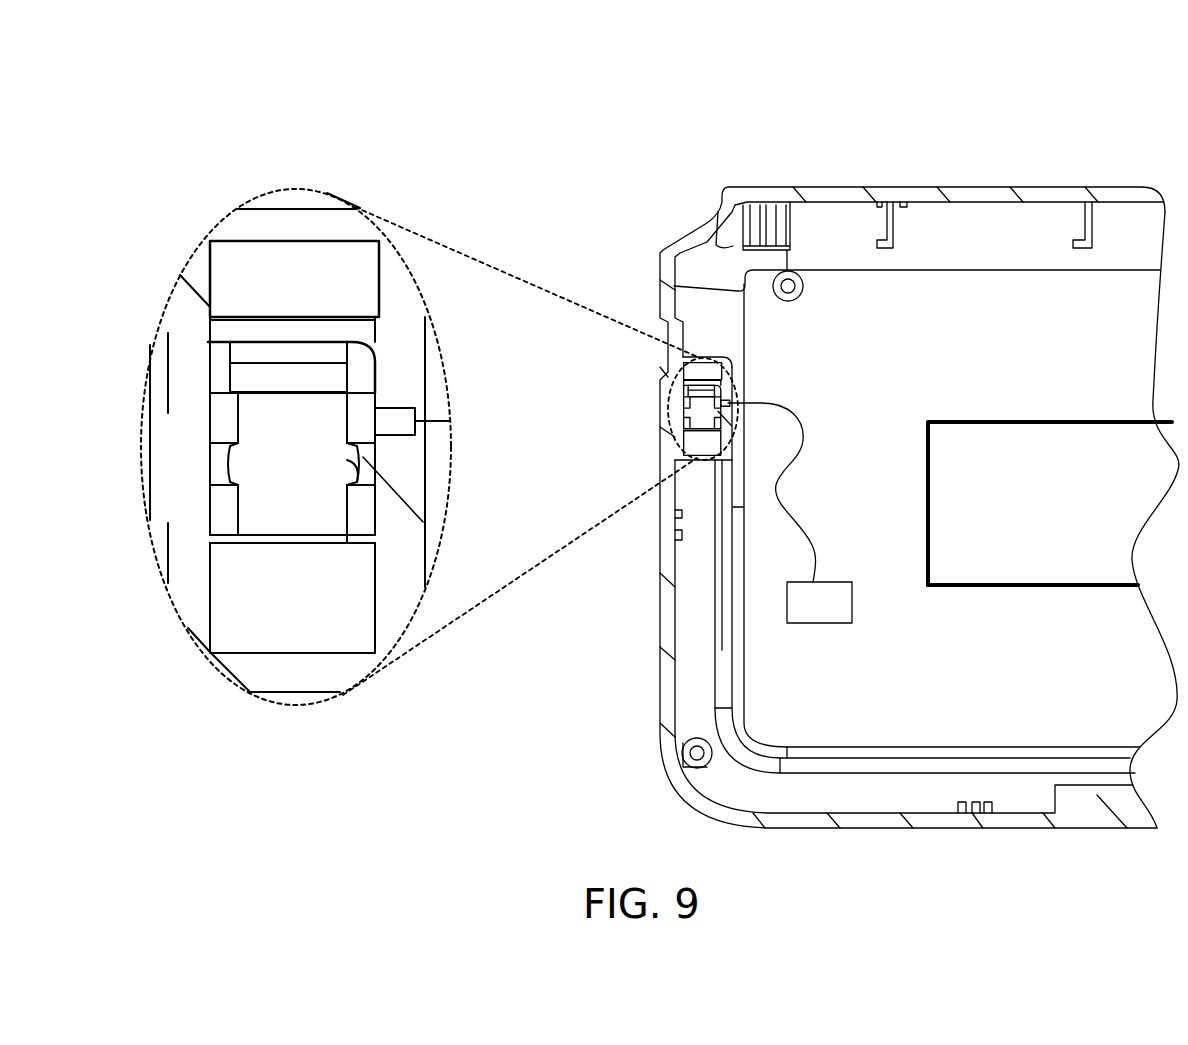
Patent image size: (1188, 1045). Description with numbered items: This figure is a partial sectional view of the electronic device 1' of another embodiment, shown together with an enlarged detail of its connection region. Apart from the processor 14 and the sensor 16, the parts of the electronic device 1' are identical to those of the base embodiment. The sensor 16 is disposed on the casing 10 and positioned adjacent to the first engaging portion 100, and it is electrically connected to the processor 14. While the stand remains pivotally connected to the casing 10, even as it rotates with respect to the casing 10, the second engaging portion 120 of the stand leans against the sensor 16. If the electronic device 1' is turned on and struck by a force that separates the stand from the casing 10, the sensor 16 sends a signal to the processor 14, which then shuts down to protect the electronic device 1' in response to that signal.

The electronic device 1' is at (1064, 94).
The casing 10 is at (827, 187).
The processor 14 is at (838, 578).
The sensor 16 is at (400, 402).
The first engaging portion 100 is at (352, 480).
The second engaging portion 120 is at (363, 416).